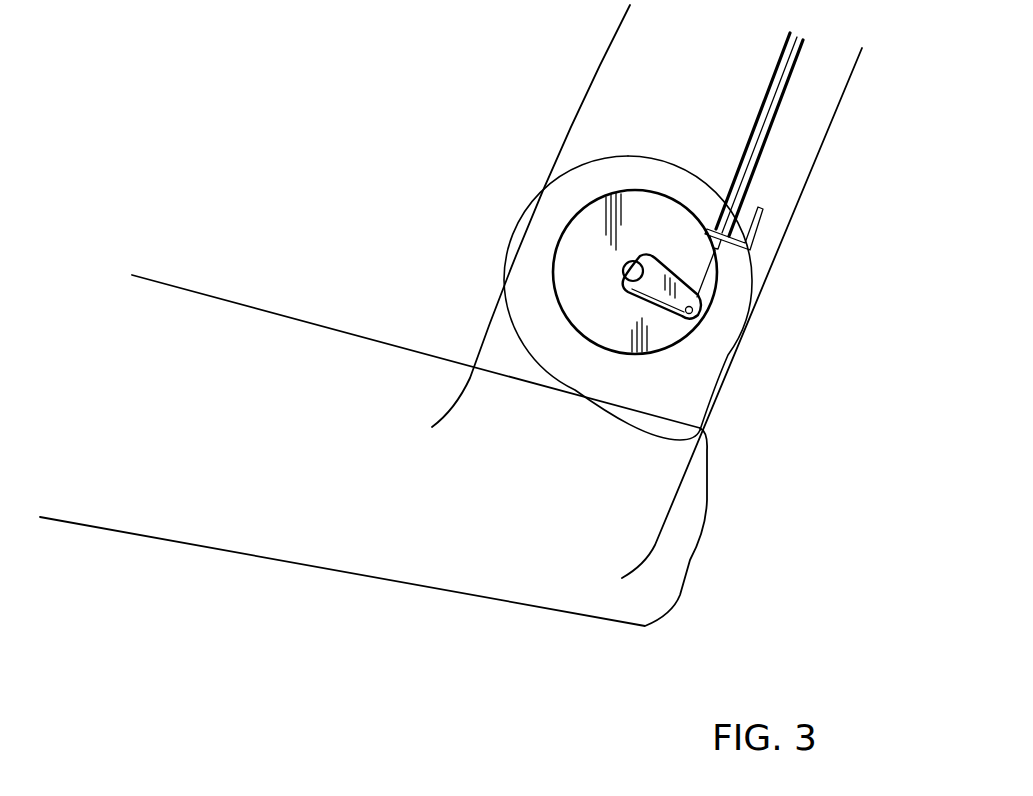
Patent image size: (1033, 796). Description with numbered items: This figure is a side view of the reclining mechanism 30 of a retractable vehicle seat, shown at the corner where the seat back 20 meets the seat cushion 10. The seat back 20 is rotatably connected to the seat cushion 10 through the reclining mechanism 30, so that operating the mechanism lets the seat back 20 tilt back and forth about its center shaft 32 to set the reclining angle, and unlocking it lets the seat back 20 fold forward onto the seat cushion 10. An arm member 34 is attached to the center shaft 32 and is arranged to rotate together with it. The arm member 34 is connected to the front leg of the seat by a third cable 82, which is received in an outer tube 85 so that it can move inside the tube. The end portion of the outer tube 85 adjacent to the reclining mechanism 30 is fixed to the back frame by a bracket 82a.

The seat cushion 10 is at (276, 310).
The seat back 20 is at (593, 73).
The seat reclining mechanism 30 is at (573, 212).
The center shaft 32 is at (624, 268).
The arm member 34 is at (662, 295).
The third cable 82 is at (703, 290).
The bracket 82a is at (757, 223).
The outer tube 85 is at (763, 143).